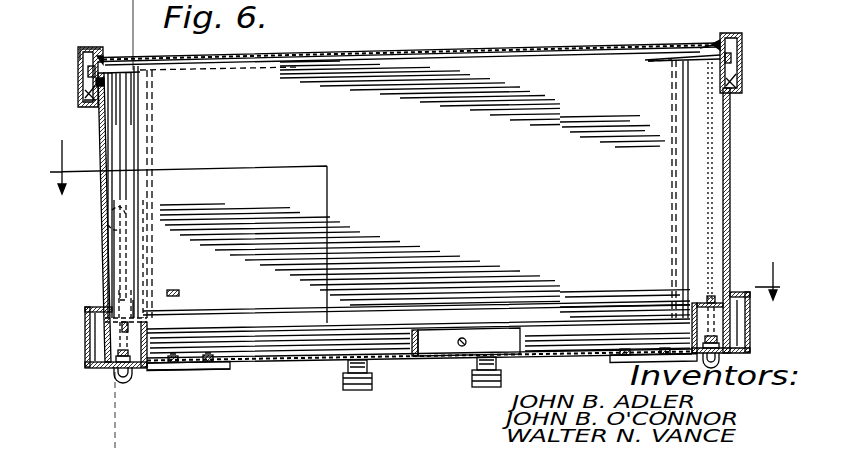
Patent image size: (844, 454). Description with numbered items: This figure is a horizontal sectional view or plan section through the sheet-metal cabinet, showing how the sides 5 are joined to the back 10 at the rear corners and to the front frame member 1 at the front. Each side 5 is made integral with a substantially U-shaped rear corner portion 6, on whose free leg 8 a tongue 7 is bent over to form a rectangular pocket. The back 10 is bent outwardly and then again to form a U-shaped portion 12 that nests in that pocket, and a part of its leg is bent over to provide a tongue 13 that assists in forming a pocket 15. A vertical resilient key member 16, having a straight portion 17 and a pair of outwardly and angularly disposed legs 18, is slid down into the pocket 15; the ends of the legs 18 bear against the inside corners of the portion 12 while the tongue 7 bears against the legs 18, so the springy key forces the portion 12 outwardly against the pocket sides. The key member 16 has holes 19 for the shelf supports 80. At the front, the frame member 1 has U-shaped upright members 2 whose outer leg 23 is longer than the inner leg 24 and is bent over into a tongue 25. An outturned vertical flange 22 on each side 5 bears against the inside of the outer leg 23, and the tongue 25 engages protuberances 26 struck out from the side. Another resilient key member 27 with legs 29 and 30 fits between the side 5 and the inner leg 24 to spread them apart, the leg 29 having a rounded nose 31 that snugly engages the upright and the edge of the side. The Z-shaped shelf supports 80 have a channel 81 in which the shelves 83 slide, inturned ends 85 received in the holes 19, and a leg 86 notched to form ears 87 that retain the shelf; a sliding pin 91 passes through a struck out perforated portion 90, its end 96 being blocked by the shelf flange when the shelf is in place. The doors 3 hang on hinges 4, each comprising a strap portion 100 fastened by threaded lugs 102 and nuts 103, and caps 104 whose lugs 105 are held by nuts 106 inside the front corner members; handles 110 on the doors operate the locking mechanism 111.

The front frame member 1 is at (136, 372).
The U-shaped upright member 2 is at (745, 363).
The swinging door 3 is at (235, 368).
The hinge 4 is at (177, 374).
The side 5 is at (101, 234).
The rear corner portion 6 is at (78, 58).
The tongue 7 is at (97, 50).
The free leg 8 is at (86, 48).
The back 10 is at (432, 52).
The U-shaped portion 12 is at (153, 33).
The tongue 13 is at (121, 195).
The pocket 15 is at (413, 231).
The key member 16 is at (106, 82).
The straight portion 17 is at (712, 44).
The leg 18 is at (85, 96).
The hole 19 is at (104, 60).
The outturned vertical flange 22 is at (108, 370).
The outer leg 23 is at (116, 348).
The inner leg 24 is at (147, 330).
The tongue 25 is at (97, 308).
The protuberance 26 is at (86, 312).
The key member 27 is at (172, 300).
The leg 29 is at (98, 350).
The leg 30 is at (148, 313).
The rounded nose 31 is at (118, 373).
The shelf support 80 is at (115, 117).
The channel 81 is at (140, 222).
The shelf 83 is at (425, 189).
The inturned end 85 is at (88, 70).
The leg 86 is at (155, 238).
The ear 87 is at (152, 123).
The struck out perforated portion 90 is at (118, 198).
The sliding pin 91 is at (104, 213).
The end of pin 96 is at (138, 205).
The strap portion 100 is at (195, 371).
The threaded lug 102 is at (165, 352).
The nut 103 is at (178, 363).
The cap 104 is at (148, 375).
The lug 105 is at (688, 300).
The nut 106 is at (705, 342).
The handle 110 is at (475, 380).
The locking mechanism 111 is at (470, 338).